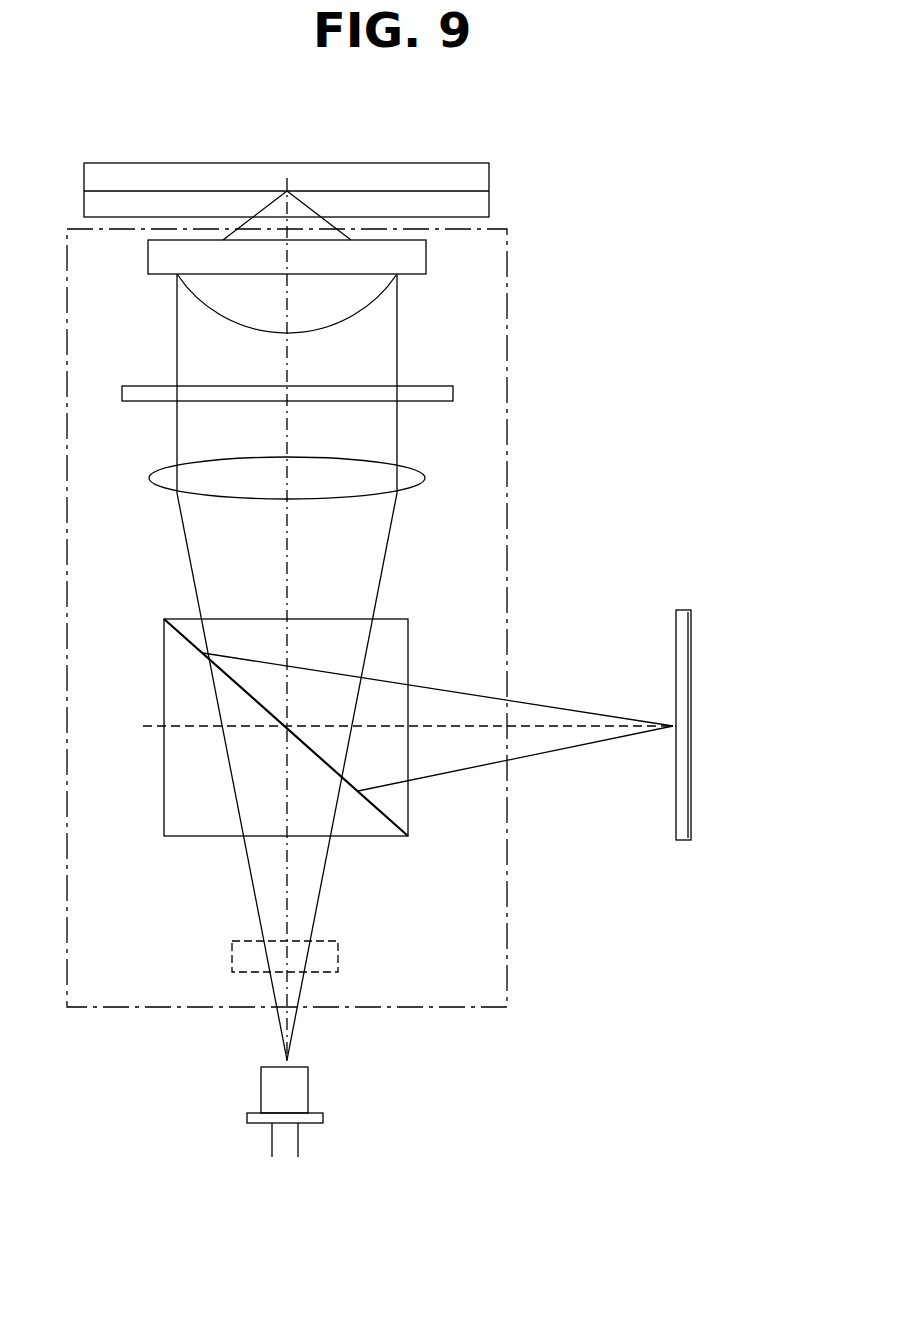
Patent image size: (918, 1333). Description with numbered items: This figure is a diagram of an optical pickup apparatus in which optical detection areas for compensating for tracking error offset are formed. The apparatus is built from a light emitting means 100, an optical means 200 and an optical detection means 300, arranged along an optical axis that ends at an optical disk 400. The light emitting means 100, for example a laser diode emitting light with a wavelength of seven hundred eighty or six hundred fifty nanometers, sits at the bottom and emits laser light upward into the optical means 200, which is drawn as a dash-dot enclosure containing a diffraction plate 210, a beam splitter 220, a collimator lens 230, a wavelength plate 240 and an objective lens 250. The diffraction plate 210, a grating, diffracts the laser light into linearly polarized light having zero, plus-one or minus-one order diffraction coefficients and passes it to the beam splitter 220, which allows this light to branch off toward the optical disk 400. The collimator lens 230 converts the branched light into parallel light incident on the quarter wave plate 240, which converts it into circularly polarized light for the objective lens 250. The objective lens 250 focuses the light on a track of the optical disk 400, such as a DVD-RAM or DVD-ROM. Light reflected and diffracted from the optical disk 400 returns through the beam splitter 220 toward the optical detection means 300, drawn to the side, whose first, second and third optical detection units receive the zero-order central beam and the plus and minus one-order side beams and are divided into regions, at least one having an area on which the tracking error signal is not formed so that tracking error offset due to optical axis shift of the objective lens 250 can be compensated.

The light emitting means 100 is at (300, 1087).
The optical means 200 is at (507, 305).
The diffraction plate 210 is at (333, 953).
The beam splitter 220 is at (402, 645).
The collimator lens 230 is at (415, 470).
The quarter wave plate 240 is at (453, 387).
The objective lens 250 is at (413, 255).
The optical detection means 300 is at (688, 625).
The optical disk 400 is at (390, 168).